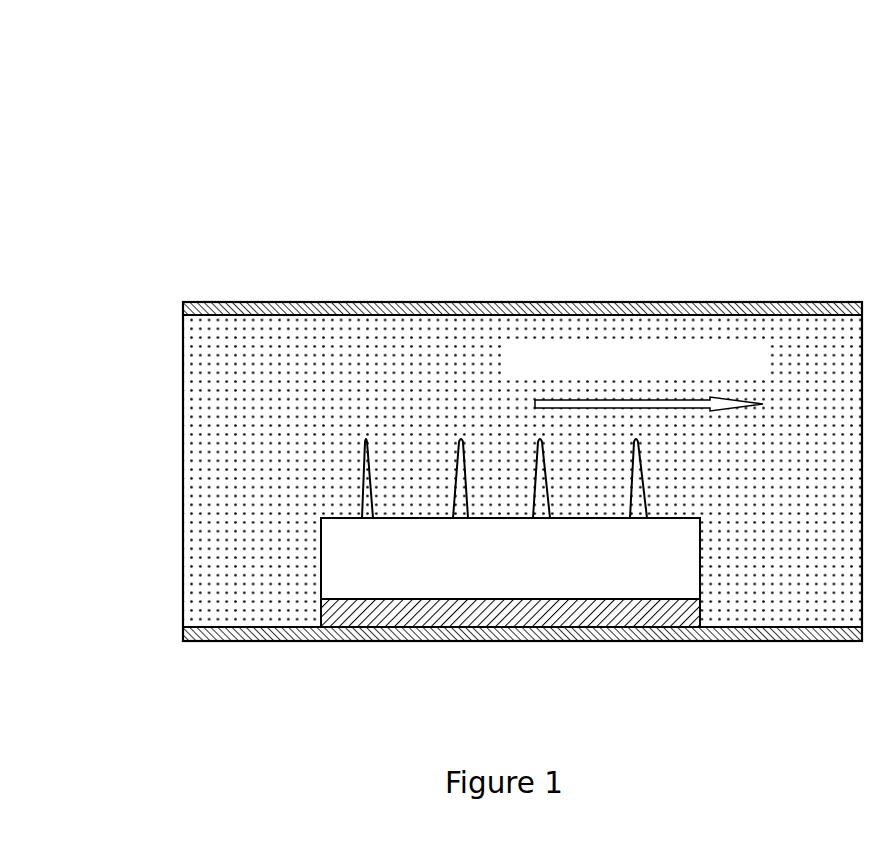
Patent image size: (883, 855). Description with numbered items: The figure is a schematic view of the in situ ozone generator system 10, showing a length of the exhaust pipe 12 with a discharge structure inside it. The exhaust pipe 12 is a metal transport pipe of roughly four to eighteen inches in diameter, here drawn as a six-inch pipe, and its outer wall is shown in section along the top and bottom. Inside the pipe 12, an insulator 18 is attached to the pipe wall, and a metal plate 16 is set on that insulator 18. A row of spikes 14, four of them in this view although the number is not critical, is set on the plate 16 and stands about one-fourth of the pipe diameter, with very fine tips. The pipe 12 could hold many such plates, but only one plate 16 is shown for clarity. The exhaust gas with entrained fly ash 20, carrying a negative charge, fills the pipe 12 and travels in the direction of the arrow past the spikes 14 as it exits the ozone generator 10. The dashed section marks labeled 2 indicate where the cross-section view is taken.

The in situ ozone generator system 10 is at (463, 167).
The exhaust pipe 12 is at (643, 302).
The spikes 14 is at (357, 465).
The plate 16 is at (592, 545).
The insulator 18 is at (498, 615).
The exhaust gas with entrained fly ash 20 is at (288, 385).
The section line of FIG. 2 is at (358, 283).